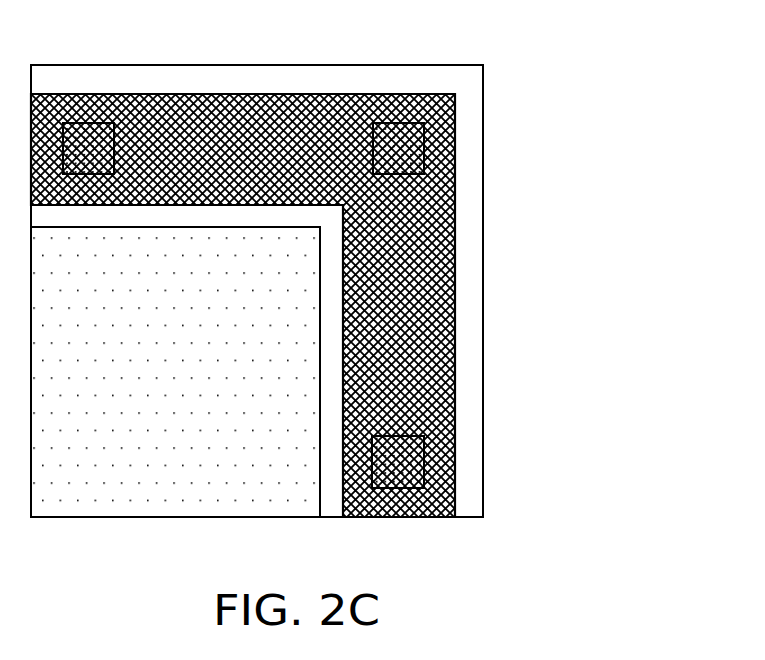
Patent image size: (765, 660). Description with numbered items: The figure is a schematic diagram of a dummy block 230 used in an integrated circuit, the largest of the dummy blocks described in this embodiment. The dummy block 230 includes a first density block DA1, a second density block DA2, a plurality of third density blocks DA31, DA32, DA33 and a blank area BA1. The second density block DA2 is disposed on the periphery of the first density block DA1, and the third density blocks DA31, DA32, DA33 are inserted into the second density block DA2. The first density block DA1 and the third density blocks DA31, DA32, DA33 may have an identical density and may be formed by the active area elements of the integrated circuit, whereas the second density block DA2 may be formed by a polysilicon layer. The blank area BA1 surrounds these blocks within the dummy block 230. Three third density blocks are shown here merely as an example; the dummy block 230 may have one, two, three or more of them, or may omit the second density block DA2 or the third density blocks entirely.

The dummy block 230 is at (415, 65).
The blank area BA1 is at (468, 273).
The second density block DA2 is at (423, 372).
The first density block DA1 is at (230, 488).
The third density block DA31 is at (92, 147).
The third density block DA32 is at (413, 147).
The third density block DA33 is at (403, 459).